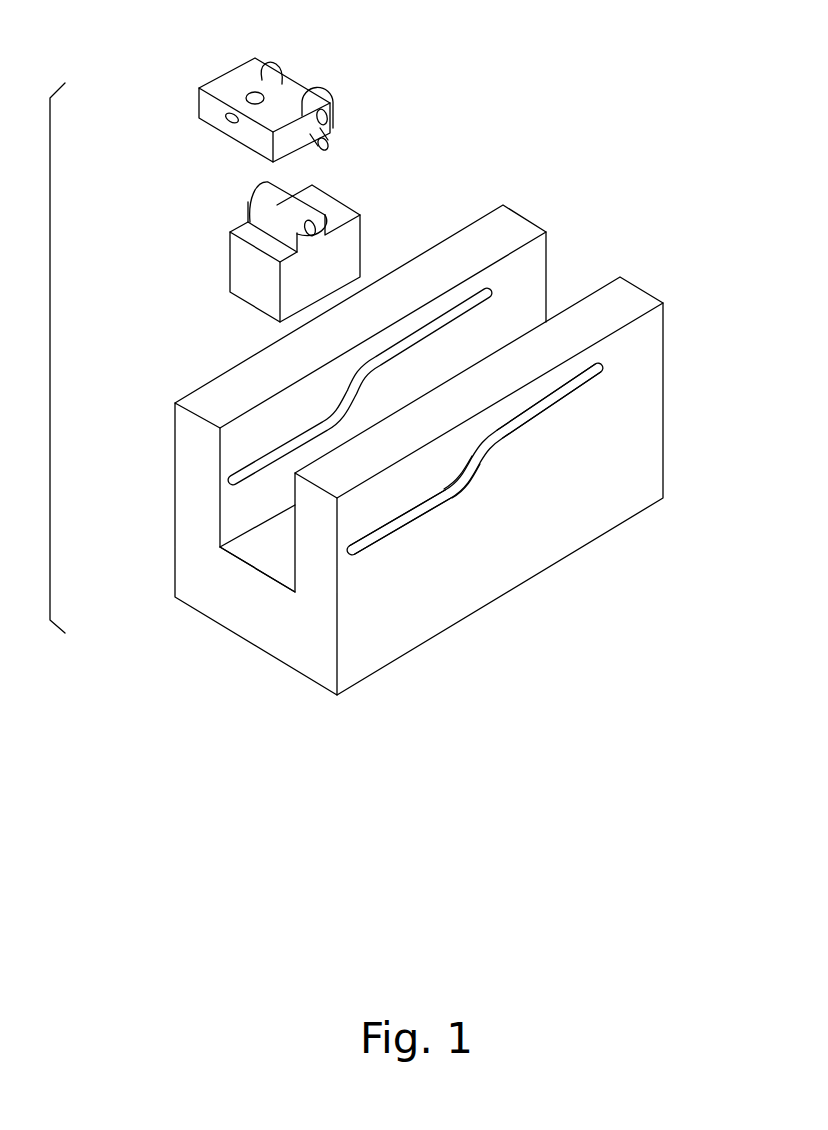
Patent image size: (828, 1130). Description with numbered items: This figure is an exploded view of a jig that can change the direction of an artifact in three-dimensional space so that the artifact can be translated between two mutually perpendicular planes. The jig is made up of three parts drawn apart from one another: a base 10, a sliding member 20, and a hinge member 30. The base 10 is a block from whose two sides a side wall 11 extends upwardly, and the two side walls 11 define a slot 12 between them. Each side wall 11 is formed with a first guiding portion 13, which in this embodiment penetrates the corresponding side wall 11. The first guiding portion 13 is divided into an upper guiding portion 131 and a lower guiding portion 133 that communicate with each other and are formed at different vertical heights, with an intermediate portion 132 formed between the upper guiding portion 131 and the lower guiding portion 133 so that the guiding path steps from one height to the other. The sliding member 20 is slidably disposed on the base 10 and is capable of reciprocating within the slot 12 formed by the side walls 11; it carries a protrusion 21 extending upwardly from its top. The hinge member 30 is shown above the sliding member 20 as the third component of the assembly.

The base 10 is at (445, 455).
The side wall 11 is at (462, 257).
The slot 12 is at (563, 282).
The first guiding portion 13 is at (509, 533).
The upper guiding portion 131 is at (548, 402).
The intermediate portion 132 is at (478, 460).
The lower guiding portion 133 is at (430, 592).
The sliding member 20 is at (254, 252).
The protrusion 21 is at (263, 208).
The hinge member 30 is at (230, 85).